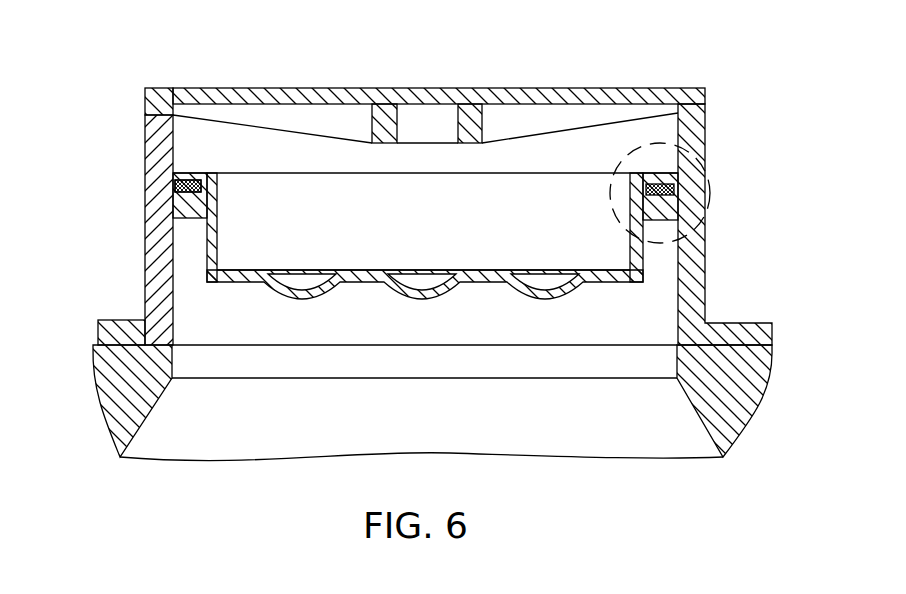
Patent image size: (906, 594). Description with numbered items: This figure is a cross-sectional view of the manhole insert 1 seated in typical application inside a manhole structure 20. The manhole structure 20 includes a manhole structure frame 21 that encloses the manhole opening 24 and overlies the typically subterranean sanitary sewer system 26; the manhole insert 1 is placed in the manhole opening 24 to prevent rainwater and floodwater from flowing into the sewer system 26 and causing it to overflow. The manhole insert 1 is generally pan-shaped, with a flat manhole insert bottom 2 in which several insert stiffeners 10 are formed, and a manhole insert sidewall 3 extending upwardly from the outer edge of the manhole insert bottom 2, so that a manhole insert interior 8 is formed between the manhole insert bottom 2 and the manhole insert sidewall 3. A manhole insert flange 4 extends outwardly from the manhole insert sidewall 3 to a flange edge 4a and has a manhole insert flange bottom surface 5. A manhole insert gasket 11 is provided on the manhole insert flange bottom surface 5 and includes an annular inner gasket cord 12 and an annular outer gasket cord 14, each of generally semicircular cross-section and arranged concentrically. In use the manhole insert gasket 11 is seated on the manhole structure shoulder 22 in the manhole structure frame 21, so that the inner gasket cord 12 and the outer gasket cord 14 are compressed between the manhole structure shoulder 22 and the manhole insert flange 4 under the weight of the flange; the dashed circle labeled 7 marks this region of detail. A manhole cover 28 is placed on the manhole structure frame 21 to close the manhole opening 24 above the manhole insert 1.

The manhole structure 20 is at (100, 81).
The manhole cover 28 is at (263, 88).
The manhole insert 1 is at (586, 158).
The flange edge 4a is at (143, 178).
The manhole insert flange 4 is at (174, 174).
The manhole insert interior 8 is at (339, 206).
The outer gasket cord 14 is at (142, 200).
The inner gasket cord 12 is at (192, 203).
The manhole structure frame 21 is at (152, 258).
The manhole structure shoulder 22 is at (190, 192).
The manhole insert sidewall 3 is at (219, 238).
The insert stiffeners 10 is at (298, 298).
The manhole opening 24 is at (392, 338).
The manhole insert flange bottom surface 5 is at (625, 205).
The detail region 7 is at (718, 203).
The manhole insert gasket 11 is at (664, 196).
The manhole insert bottom 2 is at (618, 284).
The sanitary sewer system 26 is at (421, 423).